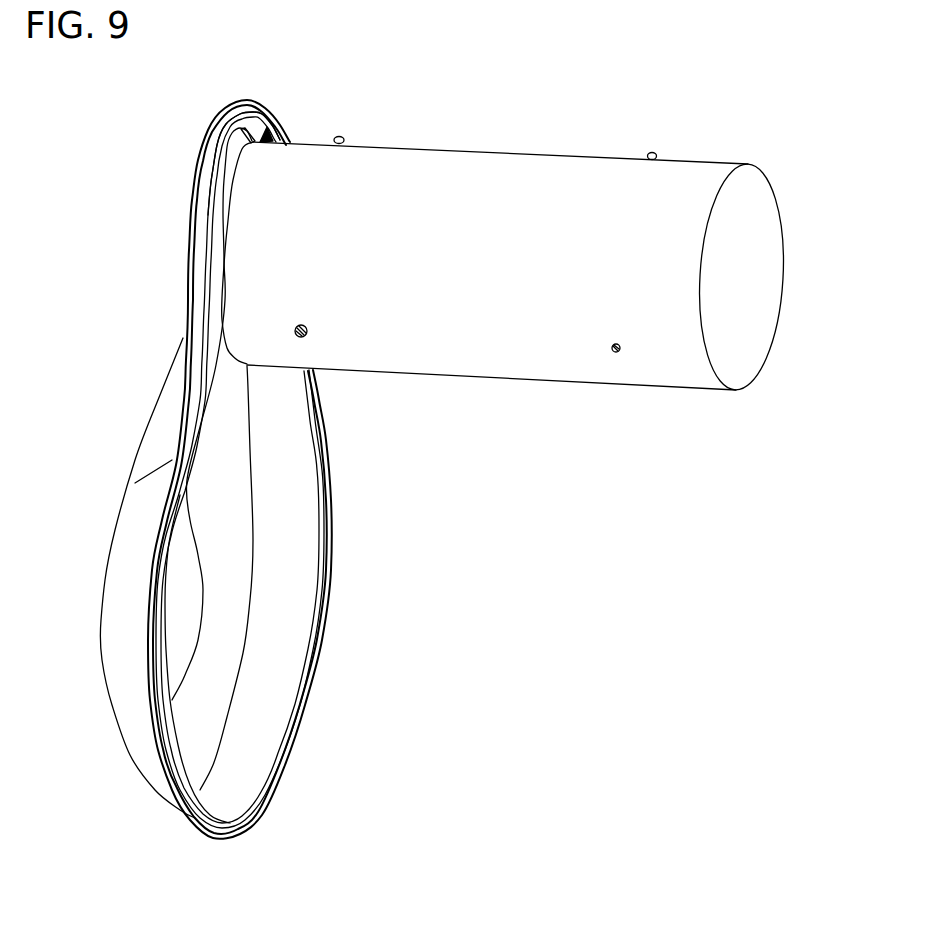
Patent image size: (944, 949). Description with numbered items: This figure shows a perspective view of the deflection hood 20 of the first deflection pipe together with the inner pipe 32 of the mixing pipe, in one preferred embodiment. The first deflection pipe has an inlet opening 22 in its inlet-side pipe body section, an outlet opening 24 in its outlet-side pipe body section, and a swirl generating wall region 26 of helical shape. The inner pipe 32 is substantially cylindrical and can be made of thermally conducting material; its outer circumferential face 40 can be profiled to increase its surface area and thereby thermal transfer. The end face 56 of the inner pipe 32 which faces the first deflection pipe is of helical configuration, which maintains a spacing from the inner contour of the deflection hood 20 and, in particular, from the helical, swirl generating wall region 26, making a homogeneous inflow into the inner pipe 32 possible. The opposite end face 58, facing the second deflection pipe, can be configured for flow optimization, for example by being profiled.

The deflection hood 20 is at (124, 566).
The inlet opening 22 is at (300, 647).
The outlet opening 24 is at (277, 128).
The swirl generating wall region 26 is at (203, 256).
The end face 56 is at (216, 190).
The inner pipe 32 is at (527, 302).
The outer circumferential face 40 is at (527, 302).
The end face 58 is at (710, 352).